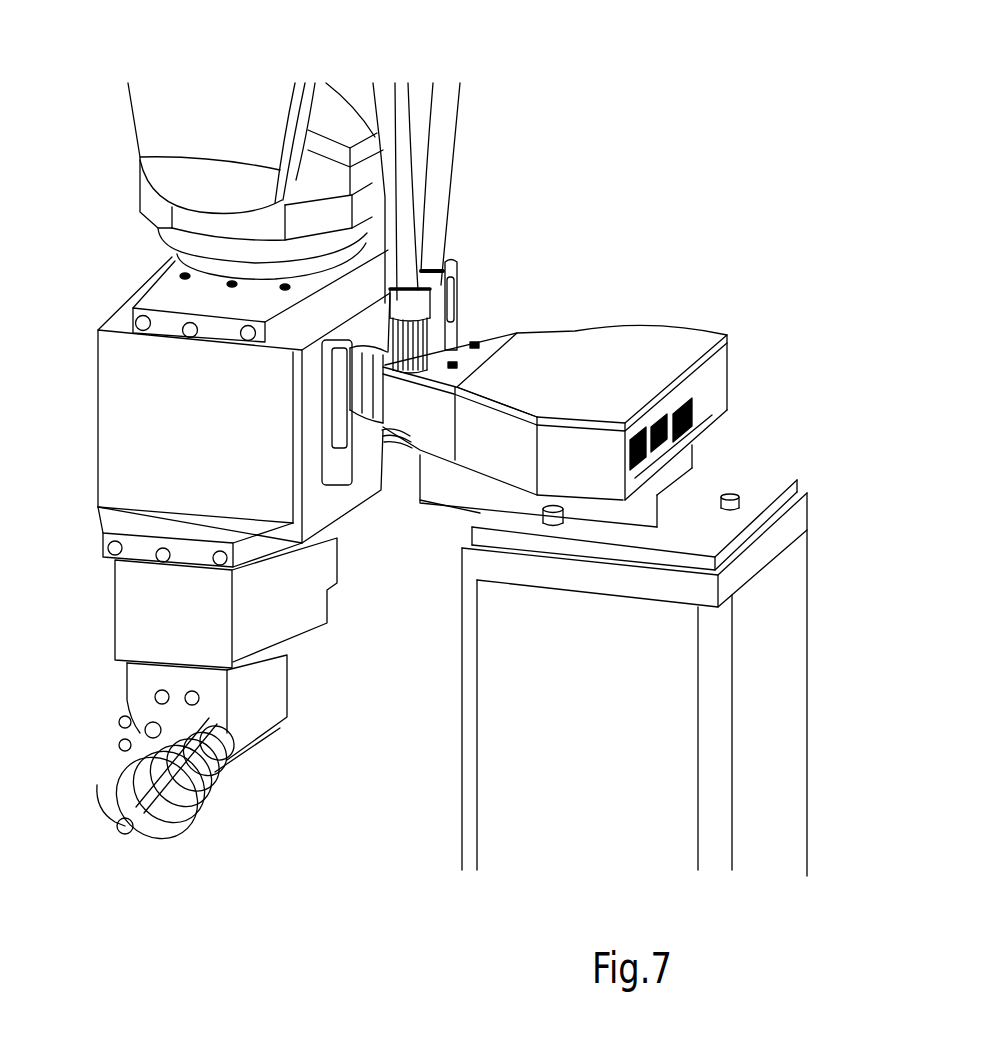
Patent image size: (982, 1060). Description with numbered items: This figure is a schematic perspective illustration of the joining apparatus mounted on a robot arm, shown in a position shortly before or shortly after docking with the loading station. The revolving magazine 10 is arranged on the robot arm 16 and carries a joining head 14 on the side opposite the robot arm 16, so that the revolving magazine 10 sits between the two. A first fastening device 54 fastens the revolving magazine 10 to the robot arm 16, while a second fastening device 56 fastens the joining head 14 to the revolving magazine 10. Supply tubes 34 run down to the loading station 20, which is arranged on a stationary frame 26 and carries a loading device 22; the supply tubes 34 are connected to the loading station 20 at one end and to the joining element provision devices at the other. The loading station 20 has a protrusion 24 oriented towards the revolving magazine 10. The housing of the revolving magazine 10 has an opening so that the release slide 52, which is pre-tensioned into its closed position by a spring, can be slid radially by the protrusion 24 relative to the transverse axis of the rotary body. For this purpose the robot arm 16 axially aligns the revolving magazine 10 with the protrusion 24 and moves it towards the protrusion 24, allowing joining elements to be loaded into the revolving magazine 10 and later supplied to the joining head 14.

The revolving magazine 10 is at (82, 379).
The joining head 14 is at (297, 776).
The robot arm 16 is at (160, 123).
The loading station 20 is at (643, 353).
The loading device 22 is at (432, 417).
The protrusion 24 is at (463, 335).
The stationary frame 26 is at (767, 695).
The supply tubes 34 is at (412, 133).
The release slide 52 is at (333, 375).
The first fastening device 54 is at (162, 286).
The second fastening device 56 is at (118, 517).